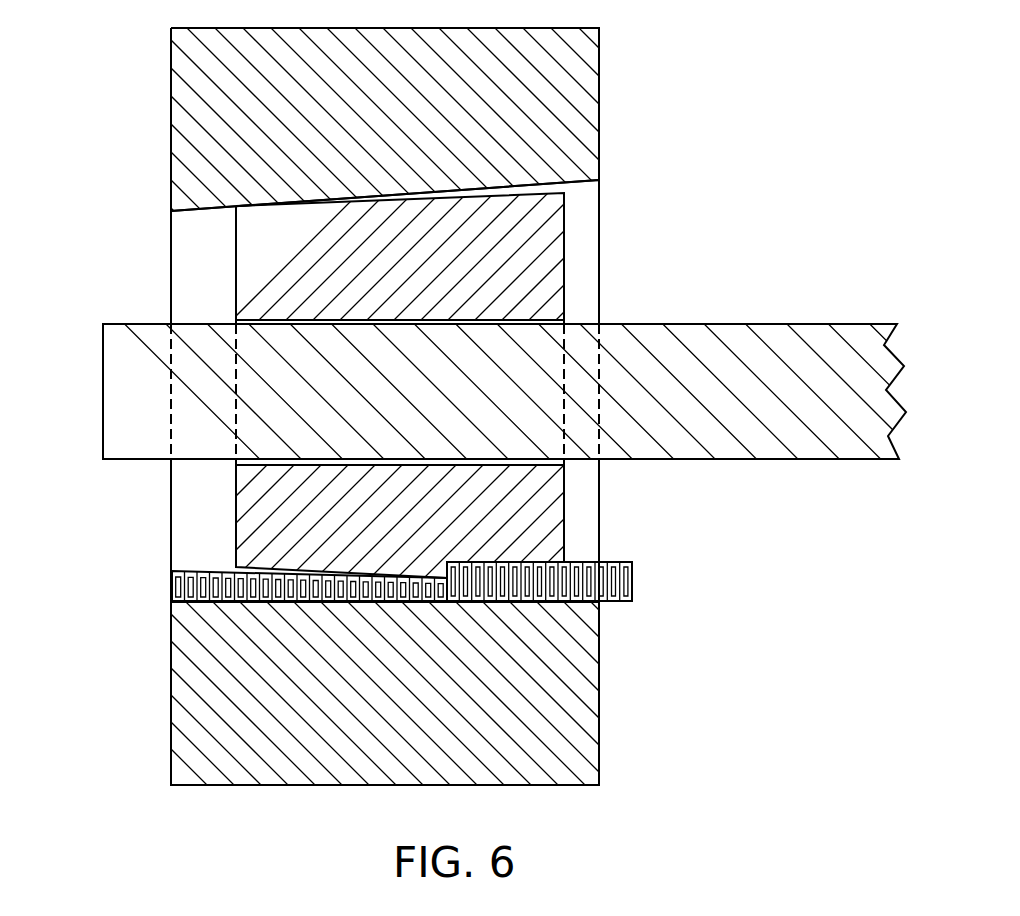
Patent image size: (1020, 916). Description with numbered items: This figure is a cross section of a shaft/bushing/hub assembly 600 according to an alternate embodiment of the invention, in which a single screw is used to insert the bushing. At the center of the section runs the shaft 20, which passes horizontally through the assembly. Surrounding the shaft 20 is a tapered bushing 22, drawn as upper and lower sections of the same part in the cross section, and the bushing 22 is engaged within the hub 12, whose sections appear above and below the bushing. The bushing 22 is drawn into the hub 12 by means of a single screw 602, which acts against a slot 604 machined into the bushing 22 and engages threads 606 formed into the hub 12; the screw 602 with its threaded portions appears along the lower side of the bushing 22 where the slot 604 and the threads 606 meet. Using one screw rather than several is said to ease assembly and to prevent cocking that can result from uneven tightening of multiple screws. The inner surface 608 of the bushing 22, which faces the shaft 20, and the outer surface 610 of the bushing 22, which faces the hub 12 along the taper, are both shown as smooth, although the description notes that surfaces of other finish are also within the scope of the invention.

The shaft/bushing/hub assembly 600 is at (95, 13).
The hub 12 is at (366, 144).
The shaft 20 is at (366, 405).
The tapered bushing 22 is at (366, 280).
The single screw 602 is at (571, 555).
The slot 604 is at (450, 562).
The threads 606 is at (430, 602).
The inner surface 608 is at (505, 324).
The outer surface 610 is at (543, 184).